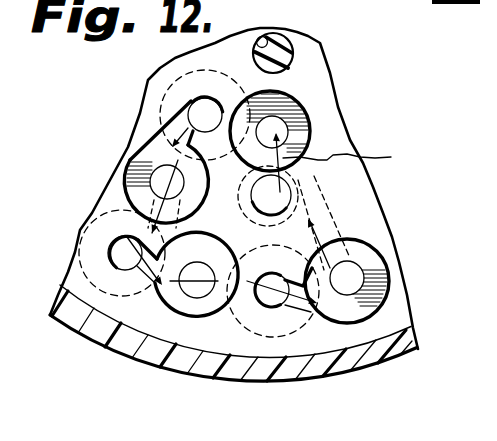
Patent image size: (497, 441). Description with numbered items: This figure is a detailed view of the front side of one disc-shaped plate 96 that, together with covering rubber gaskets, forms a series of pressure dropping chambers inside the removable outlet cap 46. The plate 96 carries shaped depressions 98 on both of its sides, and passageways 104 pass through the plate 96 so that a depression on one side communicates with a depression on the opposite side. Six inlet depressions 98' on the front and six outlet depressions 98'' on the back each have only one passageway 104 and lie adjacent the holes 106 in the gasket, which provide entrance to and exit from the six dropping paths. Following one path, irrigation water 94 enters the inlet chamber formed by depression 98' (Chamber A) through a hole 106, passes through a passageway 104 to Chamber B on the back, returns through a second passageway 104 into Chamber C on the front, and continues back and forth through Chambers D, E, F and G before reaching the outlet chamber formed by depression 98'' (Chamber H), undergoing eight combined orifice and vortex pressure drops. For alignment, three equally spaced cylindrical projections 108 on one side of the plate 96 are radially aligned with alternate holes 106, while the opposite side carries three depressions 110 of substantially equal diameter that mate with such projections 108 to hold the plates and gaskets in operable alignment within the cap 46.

The removable outlet cap 46 is at (78, 310).
The irrigation water 94 is at (352, 159).
The disc-shaped plate 96 is at (363, 190).
The shaped depression 98 is at (243, 230).
The inlet depression 98' is at (318, 127).
The outlet depression 98'' is at (407, 246).
The passageway 104 is at (276, 118).
The hole 106 is at (247, 201).
The projection 108 is at (294, 49).
The depression 110 is at (259, 39).
The Chamber A is at (302, 144).
The Chamber B is at (173, 97).
The Chamber C is at (160, 175).
The Chamber D is at (98, 256).
The Chamber E is at (203, 310).
The Chamber F is at (282, 315).
The Chamber G is at (343, 316).
The Chamber H is at (222, 211).